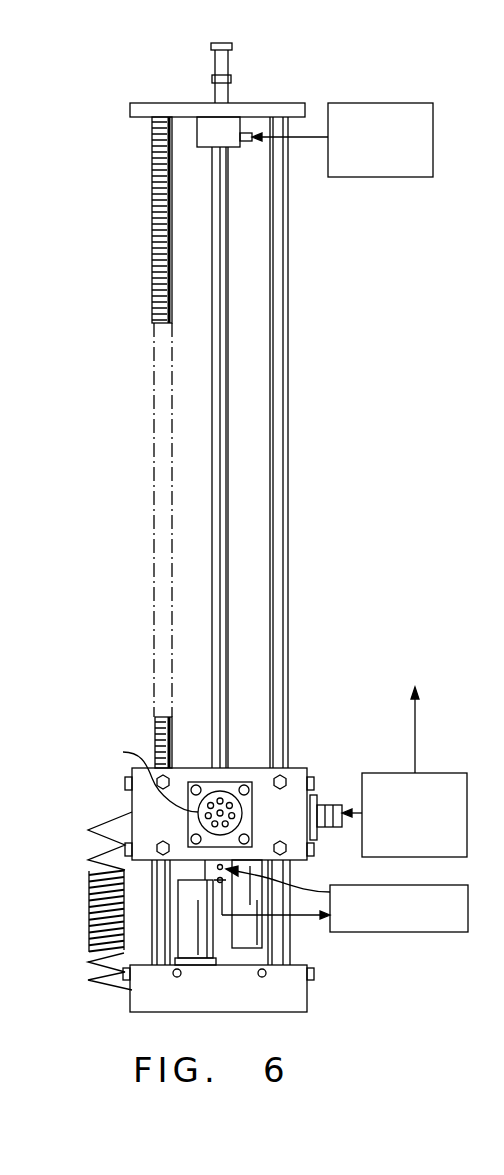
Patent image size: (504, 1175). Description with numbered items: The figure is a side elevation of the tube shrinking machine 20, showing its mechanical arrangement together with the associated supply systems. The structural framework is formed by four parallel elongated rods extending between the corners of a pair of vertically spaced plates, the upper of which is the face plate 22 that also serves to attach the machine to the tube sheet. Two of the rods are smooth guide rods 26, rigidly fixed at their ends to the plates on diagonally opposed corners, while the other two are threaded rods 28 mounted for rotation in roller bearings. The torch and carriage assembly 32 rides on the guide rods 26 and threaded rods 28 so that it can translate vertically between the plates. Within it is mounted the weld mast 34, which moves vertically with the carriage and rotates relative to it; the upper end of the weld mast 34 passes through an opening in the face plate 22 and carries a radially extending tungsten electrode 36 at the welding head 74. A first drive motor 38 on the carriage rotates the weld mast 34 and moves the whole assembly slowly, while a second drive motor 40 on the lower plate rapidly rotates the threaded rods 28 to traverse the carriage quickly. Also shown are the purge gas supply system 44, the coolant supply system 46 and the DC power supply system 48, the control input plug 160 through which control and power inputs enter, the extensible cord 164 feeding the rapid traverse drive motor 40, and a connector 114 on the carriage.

The tube shrinking machine 20 is at (112, 666).
The face plate 22 is at (245, 103).
The guide rods 26 is at (285, 345).
The threaded rods 28 is at (153, 280).
The torch and carriage assembly 32 is at (108, 799).
The weld mast 34 is at (228, 296).
The tungsten electrode 36 is at (213, 68).
The first drive motor 38 is at (262, 947).
The second drive motor 40 is at (192, 955).
The purge gas supply system 44 is at (378, 197).
The coolant supply system 46 is at (399, 950).
The DC power supply system 48 is at (385, 738).
The welding head 74 is at (244, 47).
The electrical connector 114 is at (331, 805).
The control input plug 160 is at (140, 776).
The extensible cord 164 is at (85, 915).